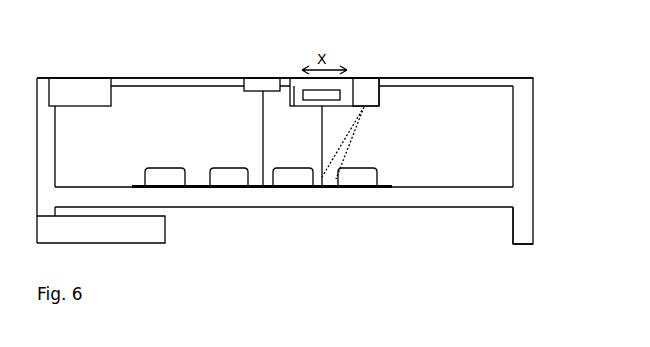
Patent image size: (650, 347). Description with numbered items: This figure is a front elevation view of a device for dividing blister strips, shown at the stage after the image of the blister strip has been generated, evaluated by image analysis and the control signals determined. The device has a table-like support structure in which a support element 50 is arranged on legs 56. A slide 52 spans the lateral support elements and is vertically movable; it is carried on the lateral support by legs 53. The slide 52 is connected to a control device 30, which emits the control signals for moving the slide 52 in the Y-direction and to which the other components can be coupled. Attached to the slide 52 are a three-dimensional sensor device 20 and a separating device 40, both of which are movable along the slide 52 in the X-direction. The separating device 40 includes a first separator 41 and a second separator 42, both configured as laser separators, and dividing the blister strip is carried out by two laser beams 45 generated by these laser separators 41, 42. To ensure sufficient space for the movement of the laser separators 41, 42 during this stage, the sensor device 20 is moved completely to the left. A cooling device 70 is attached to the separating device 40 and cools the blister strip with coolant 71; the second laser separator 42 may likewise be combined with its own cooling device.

The 3D-sensor device 20 is at (79, 91).
The control device 30 is at (100, 229).
The separating device 40 is at (346, 87).
The first separator 41 is at (322, 98).
The second separator 42 is at (262, 83).
The laser beams 45 is at (322, 127).
The support element 50 is at (443, 198).
The slide 52 is at (177, 81).
The legs 53 is at (523, 130).
The legs 56 is at (523, 215).
The cooling device 70 is at (365, 93).
The coolant 71 is at (359, 148).